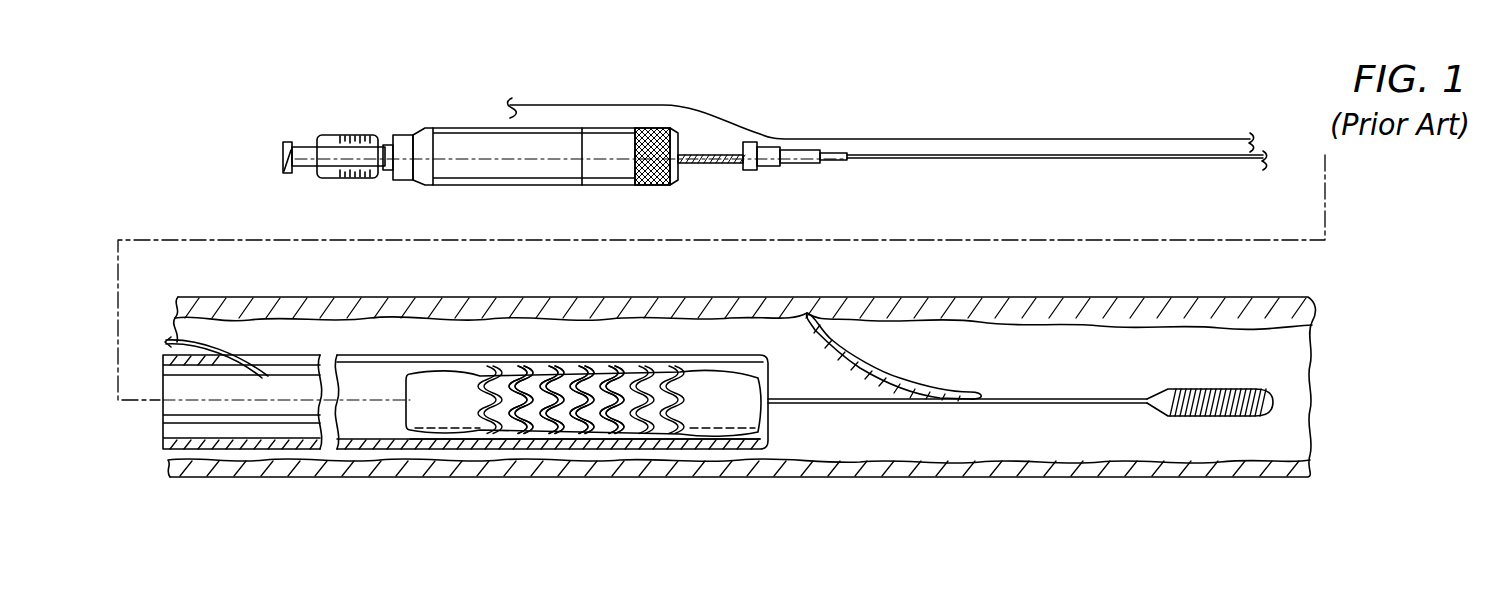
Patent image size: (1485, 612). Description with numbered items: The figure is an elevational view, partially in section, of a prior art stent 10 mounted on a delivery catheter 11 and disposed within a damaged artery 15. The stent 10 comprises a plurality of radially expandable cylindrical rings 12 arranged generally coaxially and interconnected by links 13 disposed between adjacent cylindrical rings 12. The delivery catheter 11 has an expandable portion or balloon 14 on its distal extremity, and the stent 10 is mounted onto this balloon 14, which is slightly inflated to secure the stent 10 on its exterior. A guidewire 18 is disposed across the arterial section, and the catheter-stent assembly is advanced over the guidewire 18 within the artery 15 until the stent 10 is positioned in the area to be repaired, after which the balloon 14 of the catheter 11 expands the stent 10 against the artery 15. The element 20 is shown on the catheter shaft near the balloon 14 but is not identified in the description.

The stent 10 is at (478, 385).
The delivery catheter 11 is at (365, 390).
The cylindrical rings 12 is at (610, 395).
The links 13 is at (553, 372).
The balloon 14 is at (438, 408).
The artery 15 is at (992, 458).
The guidewire 18 is at (1083, 400).
The catheter distal shaft 20 is at (490, 448).